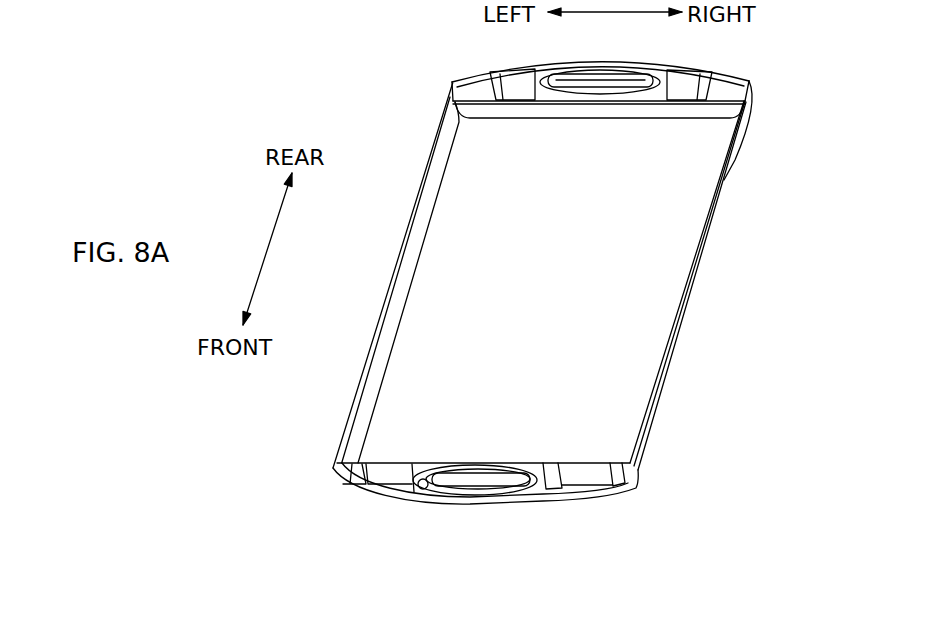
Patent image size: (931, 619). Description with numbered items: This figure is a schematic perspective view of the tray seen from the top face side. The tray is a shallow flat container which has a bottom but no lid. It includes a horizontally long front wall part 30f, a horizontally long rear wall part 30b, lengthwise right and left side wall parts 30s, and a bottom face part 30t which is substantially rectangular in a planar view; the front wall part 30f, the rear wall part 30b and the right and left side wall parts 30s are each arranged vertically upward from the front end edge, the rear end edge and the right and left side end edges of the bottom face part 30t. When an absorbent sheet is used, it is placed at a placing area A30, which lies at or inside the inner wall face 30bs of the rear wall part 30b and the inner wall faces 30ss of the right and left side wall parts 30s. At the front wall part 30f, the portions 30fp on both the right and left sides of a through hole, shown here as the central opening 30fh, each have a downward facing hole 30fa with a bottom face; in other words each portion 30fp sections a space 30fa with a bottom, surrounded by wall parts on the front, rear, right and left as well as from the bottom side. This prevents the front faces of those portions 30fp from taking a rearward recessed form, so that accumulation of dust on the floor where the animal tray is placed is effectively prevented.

The rear wall part 30b is at (600, 64).
The inner wall face of the rear wall part 30bs is at (590, 104).
The bottom face part 30t is at (560, 282).
The placing area A30 is at (572, 262).
The side wall part 30s is at (397, 251).
The inner wall face of the side wall part 30ss is at (411, 263).
The front wall part 30f is at (468, 505).
The downward facing hole 30fa is at (486, 445).
The portion on each side of the through hole 30fp is at (390, 476).
The front hole 30fh is at (487, 485).